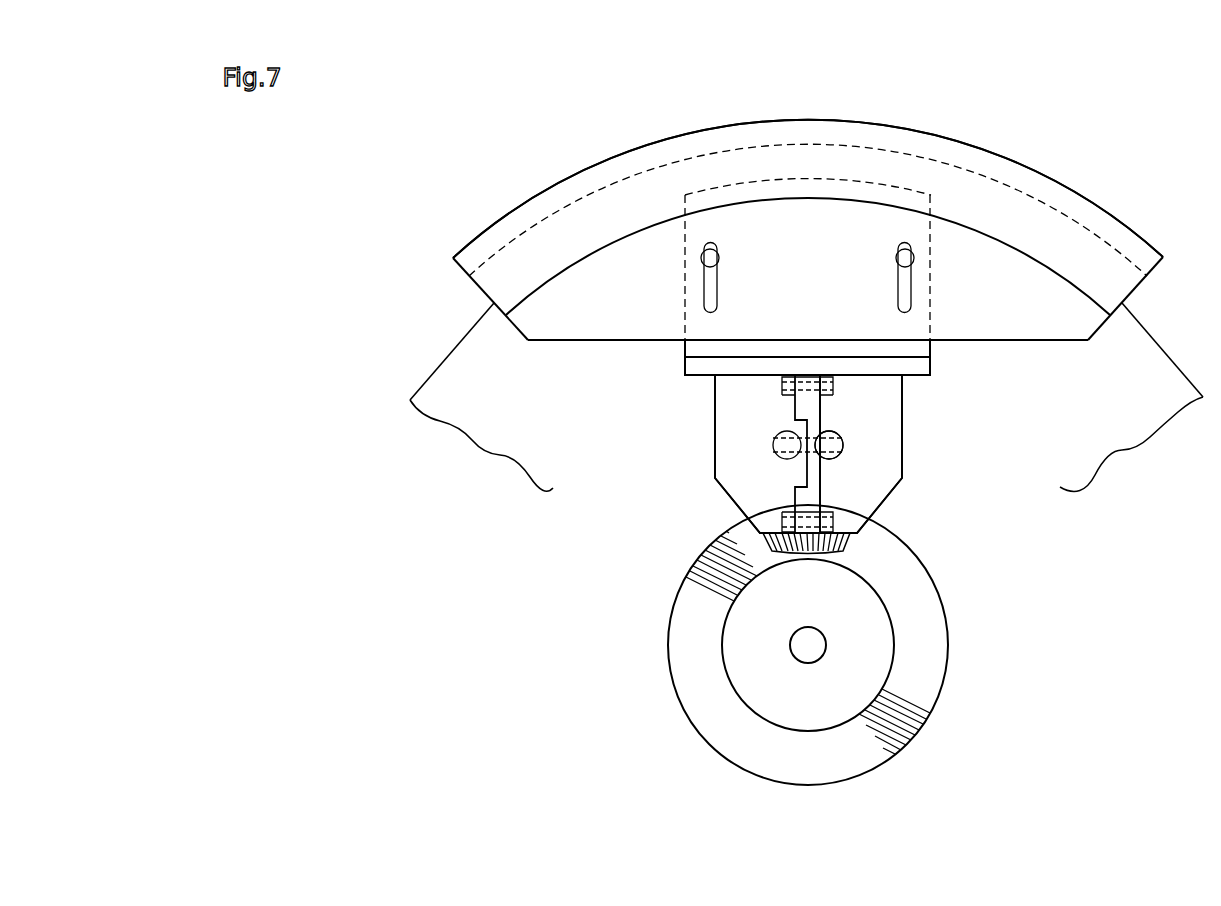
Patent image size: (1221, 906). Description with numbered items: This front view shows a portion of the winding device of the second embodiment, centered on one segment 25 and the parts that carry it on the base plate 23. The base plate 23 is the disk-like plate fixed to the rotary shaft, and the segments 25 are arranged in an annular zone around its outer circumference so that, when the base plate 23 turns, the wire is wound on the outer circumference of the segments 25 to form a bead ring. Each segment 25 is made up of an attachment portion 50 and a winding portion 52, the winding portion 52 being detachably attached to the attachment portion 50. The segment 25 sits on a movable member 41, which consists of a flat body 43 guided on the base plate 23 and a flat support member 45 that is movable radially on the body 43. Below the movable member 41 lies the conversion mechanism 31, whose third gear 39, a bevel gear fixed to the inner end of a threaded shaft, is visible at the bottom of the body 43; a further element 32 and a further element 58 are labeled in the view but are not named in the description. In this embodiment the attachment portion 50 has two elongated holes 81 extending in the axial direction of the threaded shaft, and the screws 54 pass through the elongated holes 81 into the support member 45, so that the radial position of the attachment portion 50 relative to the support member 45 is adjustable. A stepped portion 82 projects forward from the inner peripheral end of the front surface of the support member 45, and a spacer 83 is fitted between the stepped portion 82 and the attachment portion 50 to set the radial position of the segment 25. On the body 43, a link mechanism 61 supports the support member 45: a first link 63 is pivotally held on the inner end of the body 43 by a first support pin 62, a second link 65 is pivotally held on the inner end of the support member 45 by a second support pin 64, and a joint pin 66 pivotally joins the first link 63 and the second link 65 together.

The base plate 23 is at (437, 368).
The segment 25 is at (812, 118).
The conversion mechanism 31 is at (678, 595).
The roller surface portion 32 is at (918, 733).
The third gear 39 is at (806, 551).
The movable member 41 is at (628, 372).
The body 43 is at (714, 412).
The support member 45 is at (684, 372).
The attachment portion 50 is at (1024, 333).
The winding portion 52 is at (952, 148).
The screw 54 is at (702, 259).
The intermediate layer 58 is at (613, 187).
The link mechanism 61 is at (794, 412).
The first support pin 62 is at (791, 508).
The first link 63 is at (797, 490).
The second support pin 64 is at (834, 398).
The second link 65 is at (822, 418).
The joint pin 66 is at (818, 462).
The elongated hole 81 is at (706, 290).
The stepped portion 82 is at (932, 350).
The spacer 83 is at (798, 343).